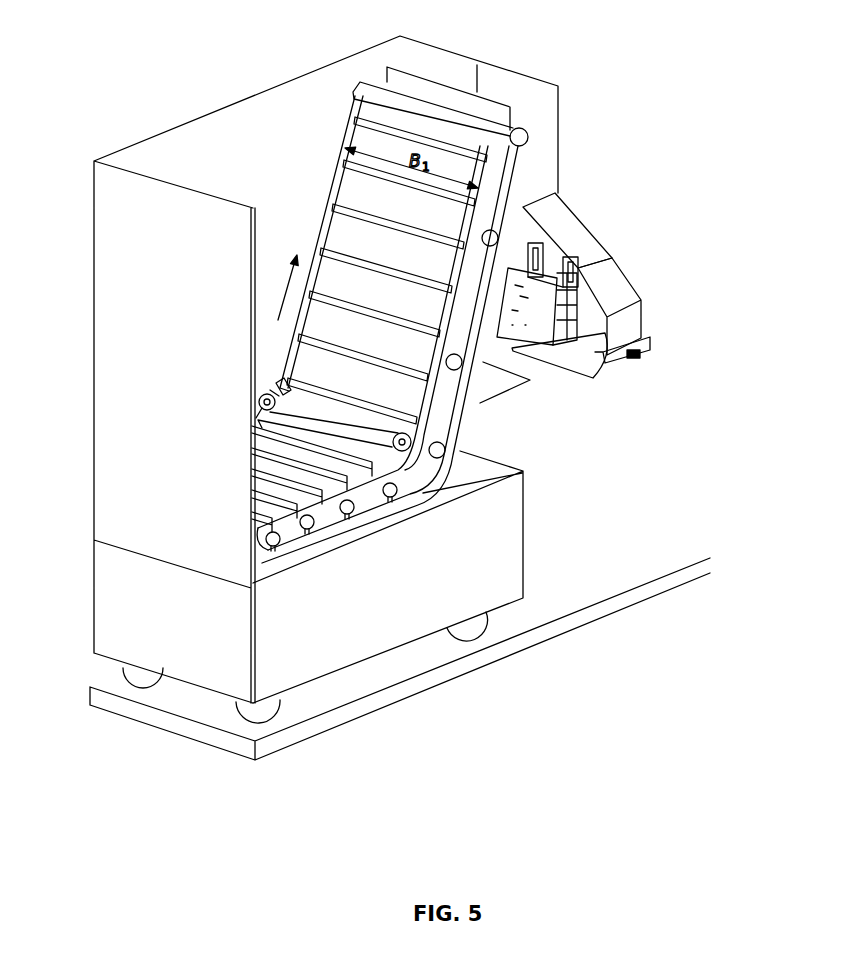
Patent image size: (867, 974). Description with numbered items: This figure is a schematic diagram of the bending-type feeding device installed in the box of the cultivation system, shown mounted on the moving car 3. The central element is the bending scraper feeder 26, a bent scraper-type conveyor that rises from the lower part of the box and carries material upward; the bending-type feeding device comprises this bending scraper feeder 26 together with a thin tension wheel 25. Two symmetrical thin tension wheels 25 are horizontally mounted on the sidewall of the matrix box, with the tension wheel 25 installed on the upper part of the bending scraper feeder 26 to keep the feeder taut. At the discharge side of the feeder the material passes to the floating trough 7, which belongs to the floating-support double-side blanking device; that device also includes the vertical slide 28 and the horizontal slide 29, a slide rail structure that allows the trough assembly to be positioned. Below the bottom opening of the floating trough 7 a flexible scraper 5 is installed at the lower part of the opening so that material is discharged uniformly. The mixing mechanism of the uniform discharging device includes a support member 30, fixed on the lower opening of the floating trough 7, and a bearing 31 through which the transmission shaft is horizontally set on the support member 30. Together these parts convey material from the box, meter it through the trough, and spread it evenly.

The moving car 3 is at (345, 647).
The flexible scraper 5 is at (587, 365).
The floating trough 7 is at (568, 227).
The thin tension wheel 25 is at (260, 398).
The bending scraper feeder 26 is at (407, 254).
The vertical slide 28 is at (592, 250).
The horizontal slide 29 is at (583, 308).
The support member 30 is at (647, 339).
The bearing 31 is at (637, 358).